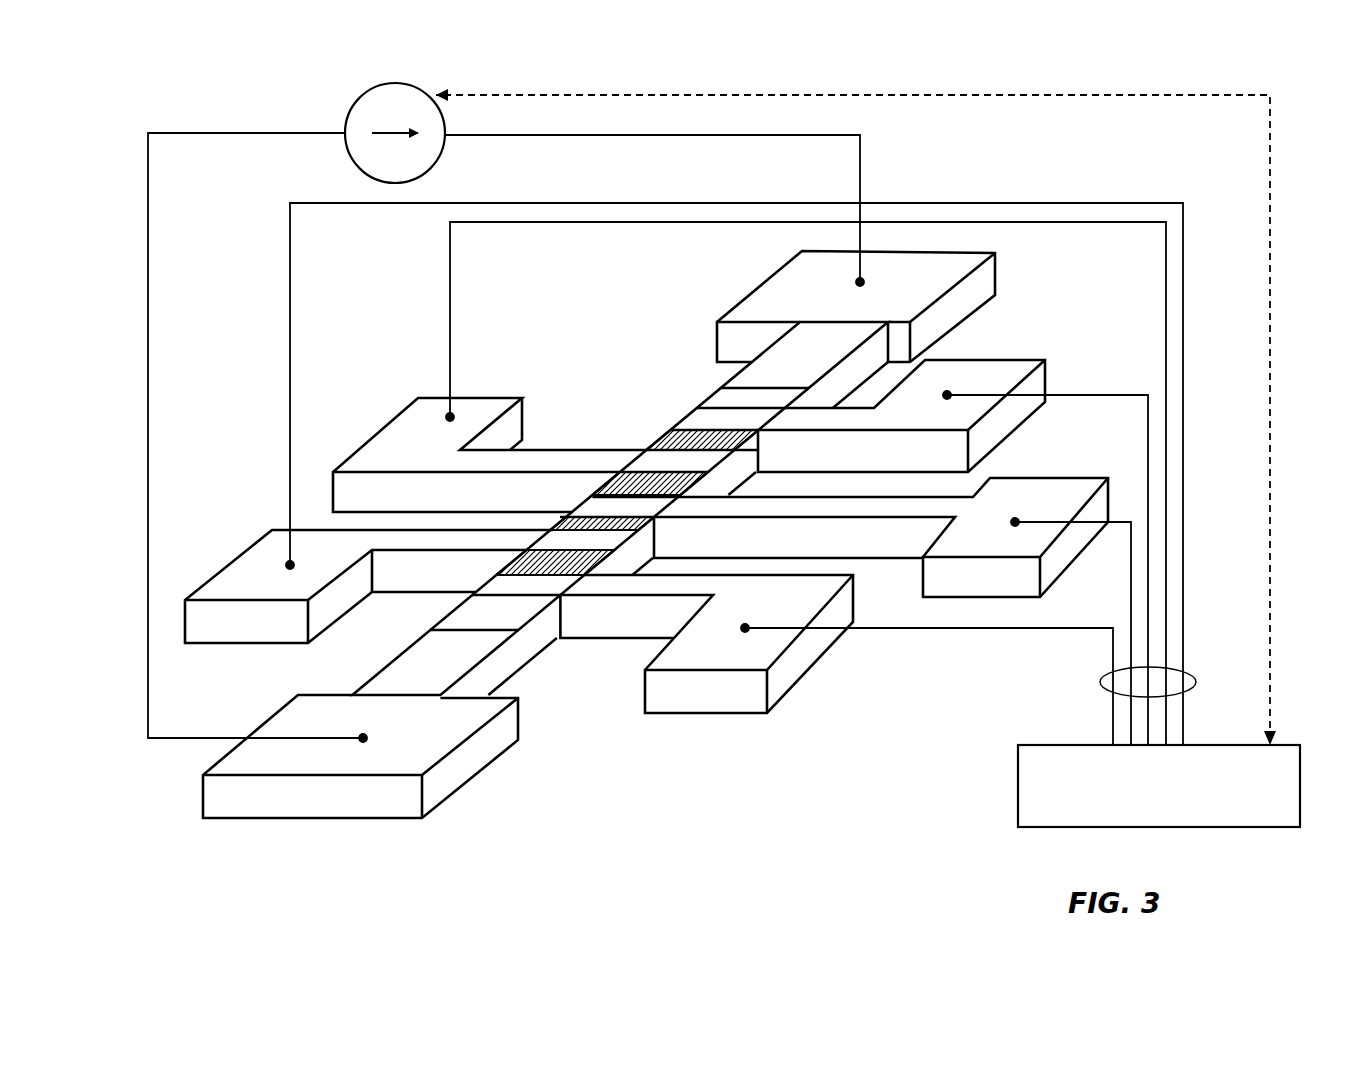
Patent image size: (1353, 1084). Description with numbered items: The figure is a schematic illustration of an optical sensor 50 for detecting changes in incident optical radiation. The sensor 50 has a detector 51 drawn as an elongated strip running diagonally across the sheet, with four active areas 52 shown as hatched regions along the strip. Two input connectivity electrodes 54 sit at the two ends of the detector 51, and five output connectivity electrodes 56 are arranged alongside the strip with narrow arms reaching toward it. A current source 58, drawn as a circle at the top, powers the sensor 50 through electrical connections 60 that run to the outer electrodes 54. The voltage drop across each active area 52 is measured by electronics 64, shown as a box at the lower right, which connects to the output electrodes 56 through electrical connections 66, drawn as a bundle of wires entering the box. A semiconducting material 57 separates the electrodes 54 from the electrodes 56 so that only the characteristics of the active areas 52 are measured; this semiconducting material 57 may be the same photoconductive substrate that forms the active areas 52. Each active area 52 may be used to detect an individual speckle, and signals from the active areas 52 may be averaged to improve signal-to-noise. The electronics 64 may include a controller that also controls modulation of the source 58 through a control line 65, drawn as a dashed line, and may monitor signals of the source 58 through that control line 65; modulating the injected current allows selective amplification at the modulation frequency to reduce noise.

The optical sensor 50 is at (285, 897).
The detector 51 is at (350, 642).
The active areas 52 is at (555, 562).
The input connectivity electrodes 54 is at (997, 270).
The output connectivity electrodes 56 is at (418, 420).
The semiconducting material 57 is at (765, 393).
The current source 58 is at (408, 172).
The electrical connections 60 is at (862, 157).
The electronics 64 is at (1173, 817).
The control line 65 is at (1275, 590).
The electrical connections 66 is at (1198, 684).